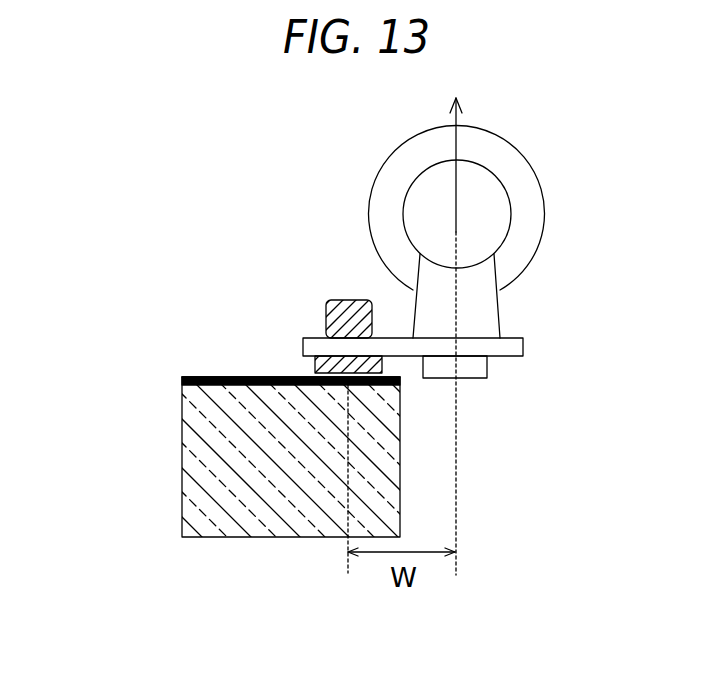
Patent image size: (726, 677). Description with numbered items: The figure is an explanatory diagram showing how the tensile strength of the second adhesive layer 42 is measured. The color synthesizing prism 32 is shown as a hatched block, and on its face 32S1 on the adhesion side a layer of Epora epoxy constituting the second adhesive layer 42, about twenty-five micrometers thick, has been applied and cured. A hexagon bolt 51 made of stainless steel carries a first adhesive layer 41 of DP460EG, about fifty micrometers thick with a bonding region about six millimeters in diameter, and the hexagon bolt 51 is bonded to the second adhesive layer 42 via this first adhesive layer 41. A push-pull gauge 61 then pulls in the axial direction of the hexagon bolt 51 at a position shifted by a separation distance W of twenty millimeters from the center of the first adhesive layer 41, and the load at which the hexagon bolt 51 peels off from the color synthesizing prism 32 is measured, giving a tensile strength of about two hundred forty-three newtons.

The push-pull gauge 61 is at (585, 180).
The hexagon bolt 51 is at (318, 320).
The first adhesive layer 41 is at (322, 362).
The second adhesive layer 42 is at (228, 378).
The color synthesizing prism 32 is at (200, 468).
The face on the adhesion side of the color synthesizing prism 32S1 is at (204, 385).